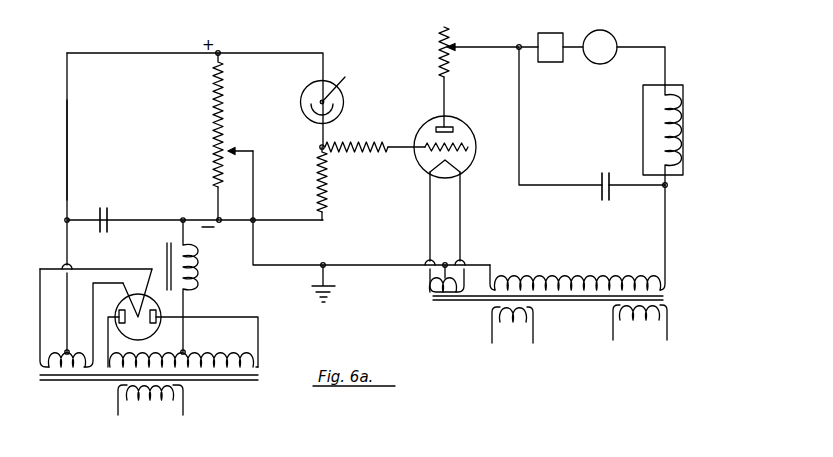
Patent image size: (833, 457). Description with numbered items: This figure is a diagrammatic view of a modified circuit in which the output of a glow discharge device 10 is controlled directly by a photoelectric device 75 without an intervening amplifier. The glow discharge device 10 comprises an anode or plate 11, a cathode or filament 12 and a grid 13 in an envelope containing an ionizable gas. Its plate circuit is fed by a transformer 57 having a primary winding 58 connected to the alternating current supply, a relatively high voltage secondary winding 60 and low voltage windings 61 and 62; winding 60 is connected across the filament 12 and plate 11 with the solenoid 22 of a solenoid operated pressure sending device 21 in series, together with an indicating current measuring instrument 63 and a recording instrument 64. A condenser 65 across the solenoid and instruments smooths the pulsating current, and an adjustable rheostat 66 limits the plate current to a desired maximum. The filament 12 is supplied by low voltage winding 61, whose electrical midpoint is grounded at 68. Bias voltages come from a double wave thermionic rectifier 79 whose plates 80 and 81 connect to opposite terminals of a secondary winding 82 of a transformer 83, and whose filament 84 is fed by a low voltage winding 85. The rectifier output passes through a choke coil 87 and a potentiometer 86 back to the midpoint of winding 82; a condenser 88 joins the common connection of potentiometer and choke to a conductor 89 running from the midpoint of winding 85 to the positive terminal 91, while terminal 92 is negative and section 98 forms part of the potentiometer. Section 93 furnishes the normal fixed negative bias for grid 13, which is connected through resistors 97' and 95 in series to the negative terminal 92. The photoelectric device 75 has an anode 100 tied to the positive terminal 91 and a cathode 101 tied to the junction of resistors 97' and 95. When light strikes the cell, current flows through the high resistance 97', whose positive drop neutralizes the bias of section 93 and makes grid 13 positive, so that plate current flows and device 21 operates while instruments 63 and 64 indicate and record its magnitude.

The positive terminal 91 is at (222, 52).
The potentiometer section 98 is at (226, 97).
The potentiometer 86 is at (209, 127).
The potentiometer section 93 is at (226, 172).
The conductor 89 is at (68, 170).
The condenser 88 is at (110, 214).
The negative terminal 92 is at (221, 224).
The photoelectric device 75 is at (303, 108).
The anode 100 is at (348, 83).
The cathode 101 is at (333, 108).
The protective resistor 95 is at (373, 146).
The resistor 97' is at (343, 179).
The glow discharge device 10 is at (434, 117).
The anode 11 is at (455, 126).
The cathode 12 is at (428, 170).
The grid 13 is at (466, 152).
The adjustable rheostat 66 is at (452, 32).
The recording instrument 64 is at (548, 62).
The indicating current measuring instrument 63 is at (600, 64).
The solenoid operated pressure sending device 21 is at (709, 117).
The solenoid 22 is at (677, 155).
The condenser 65 is at (609, 195).
The ground 68 is at (330, 278).
The low voltage winding 61 is at (428, 290).
The high voltage secondary winding 60 is at (604, 278).
The transformer 57 is at (584, 329).
The low voltage winding 62 is at (512, 330).
The primary winding 58 is at (636, 325).
The low voltage winding 85 is at (70, 372).
The filament 84 is at (140, 308).
The double wave thermionic rectifier 79 is at (118, 308).
The plate 80 is at (122, 328).
The plate 81 is at (156, 328).
The secondary winding 82 is at (206, 356).
The choke coil 87 is at (194, 270).
The transformer 83 is at (232, 404).